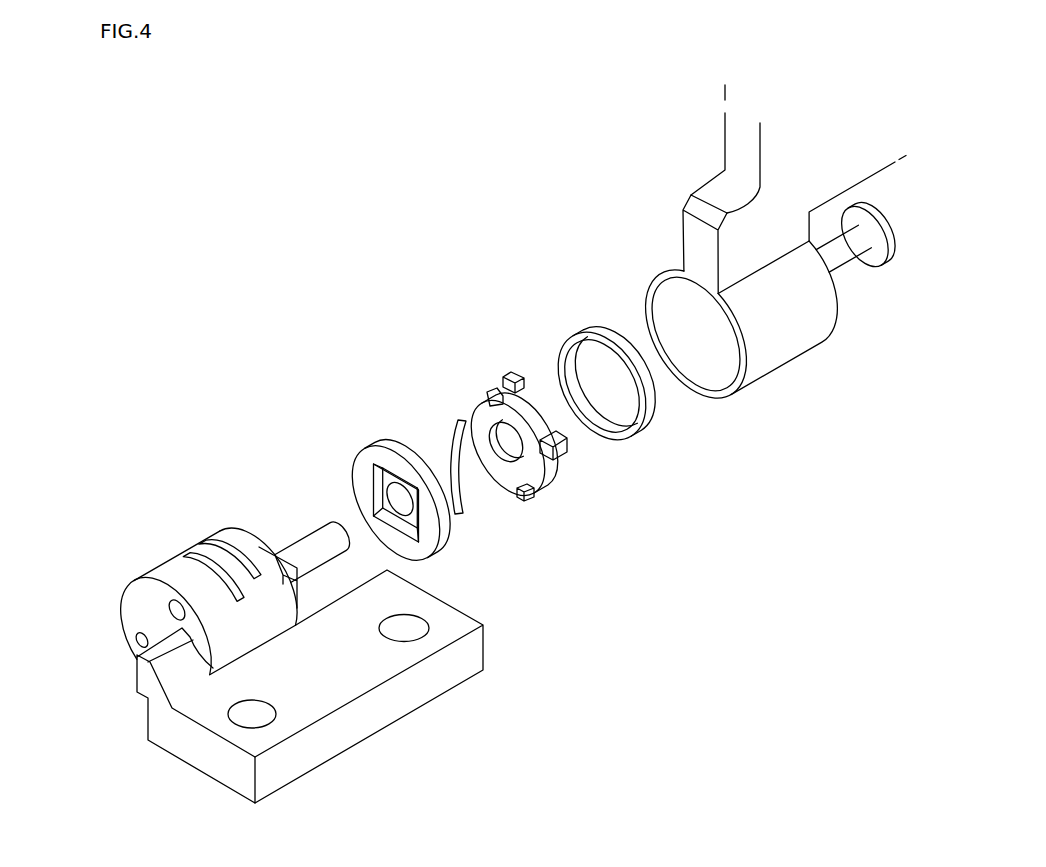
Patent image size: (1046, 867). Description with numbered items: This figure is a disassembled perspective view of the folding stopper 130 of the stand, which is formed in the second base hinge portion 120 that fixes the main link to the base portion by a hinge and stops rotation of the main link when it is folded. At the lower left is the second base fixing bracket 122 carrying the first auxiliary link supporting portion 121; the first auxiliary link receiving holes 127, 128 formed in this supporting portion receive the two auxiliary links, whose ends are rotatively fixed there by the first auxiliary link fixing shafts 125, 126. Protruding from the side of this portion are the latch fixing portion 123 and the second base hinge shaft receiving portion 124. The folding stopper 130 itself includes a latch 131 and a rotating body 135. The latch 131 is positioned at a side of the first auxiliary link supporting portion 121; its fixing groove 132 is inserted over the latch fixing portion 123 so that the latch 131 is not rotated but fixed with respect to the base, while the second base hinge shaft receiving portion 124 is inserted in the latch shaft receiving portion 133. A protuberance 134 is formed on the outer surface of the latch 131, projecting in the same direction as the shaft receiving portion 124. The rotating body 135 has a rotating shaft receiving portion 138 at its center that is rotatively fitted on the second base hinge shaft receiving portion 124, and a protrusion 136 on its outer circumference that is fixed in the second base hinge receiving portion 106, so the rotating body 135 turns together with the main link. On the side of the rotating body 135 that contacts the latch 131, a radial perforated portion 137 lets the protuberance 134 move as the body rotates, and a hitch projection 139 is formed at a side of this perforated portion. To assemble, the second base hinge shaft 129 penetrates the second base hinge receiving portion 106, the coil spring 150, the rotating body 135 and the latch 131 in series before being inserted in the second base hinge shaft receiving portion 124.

The second base hinge receiving portion 106 is at (778, 358).
The second base hinge portion 120 is at (121, 702).
The first auxiliary link supporting portion 121 is at (173, 567).
The second base fixing bracket 122 is at (340, 737).
The latch fixing portion 123 is at (280, 576).
The second base hinge shaft receiving portion 124 is at (320, 532).
The first auxiliary link fixing shaft 125 is at (172, 612).
The first auxiliary link fixing shaft 126 is at (137, 643).
The first auxiliary link receiving hole 127 is at (196, 552).
The first auxiliary link receiving hole 128 is at (227, 550).
The second base hinge shaft 129 is at (871, 262).
The folding stopper 130 is at (552, 268).
The latch 131 is at (397, 446).
The fixing groove 132 is at (373, 477).
The latch shaft receiving portion 133 is at (403, 488).
The protuberance 134 is at (456, 514).
The rotating body 135 is at (536, 400).
The protrusion 136 is at (515, 372).
The radial perforated portion 137 is at (548, 462).
The rotating shaft receiving portion 138 is at (503, 404).
The hitch projection 139 is at (521, 501).
The coil spring 150 is at (616, 438).